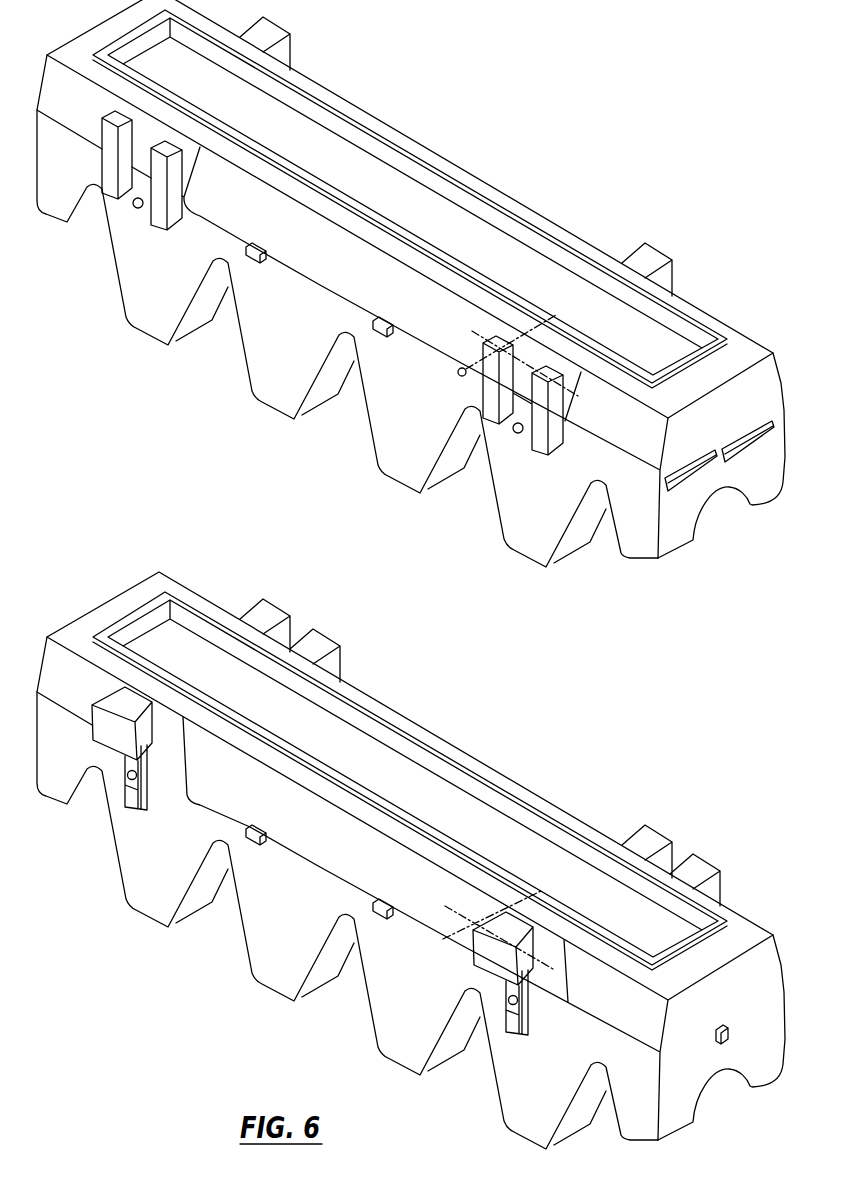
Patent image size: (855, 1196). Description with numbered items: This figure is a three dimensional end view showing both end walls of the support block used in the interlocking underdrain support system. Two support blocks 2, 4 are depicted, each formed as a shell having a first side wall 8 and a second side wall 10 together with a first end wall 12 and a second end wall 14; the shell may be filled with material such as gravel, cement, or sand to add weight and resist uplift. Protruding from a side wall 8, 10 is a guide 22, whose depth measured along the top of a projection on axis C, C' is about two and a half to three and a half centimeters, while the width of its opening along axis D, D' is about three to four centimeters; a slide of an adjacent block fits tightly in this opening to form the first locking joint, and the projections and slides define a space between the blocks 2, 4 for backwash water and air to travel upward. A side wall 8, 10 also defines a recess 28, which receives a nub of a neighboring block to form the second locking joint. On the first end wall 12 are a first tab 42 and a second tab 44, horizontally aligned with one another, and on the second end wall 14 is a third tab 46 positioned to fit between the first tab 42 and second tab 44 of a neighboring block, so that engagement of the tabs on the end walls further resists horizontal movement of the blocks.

The support block 2 is at (432, 290).
The support block 4 is at (397, 867).
The first side wall 8 is at (277, 973).
The second side wall 10 is at (157, 318).
The first end wall 12 is at (743, 467).
The second end wall 14 is at (721, 1048).
The guide 22 is at (125, 217).
The recess 28 is at (98, 744).
The first tab 42 is at (770, 435).
The second tab 44 is at (692, 482).
The third tab 46 is at (725, 1043).